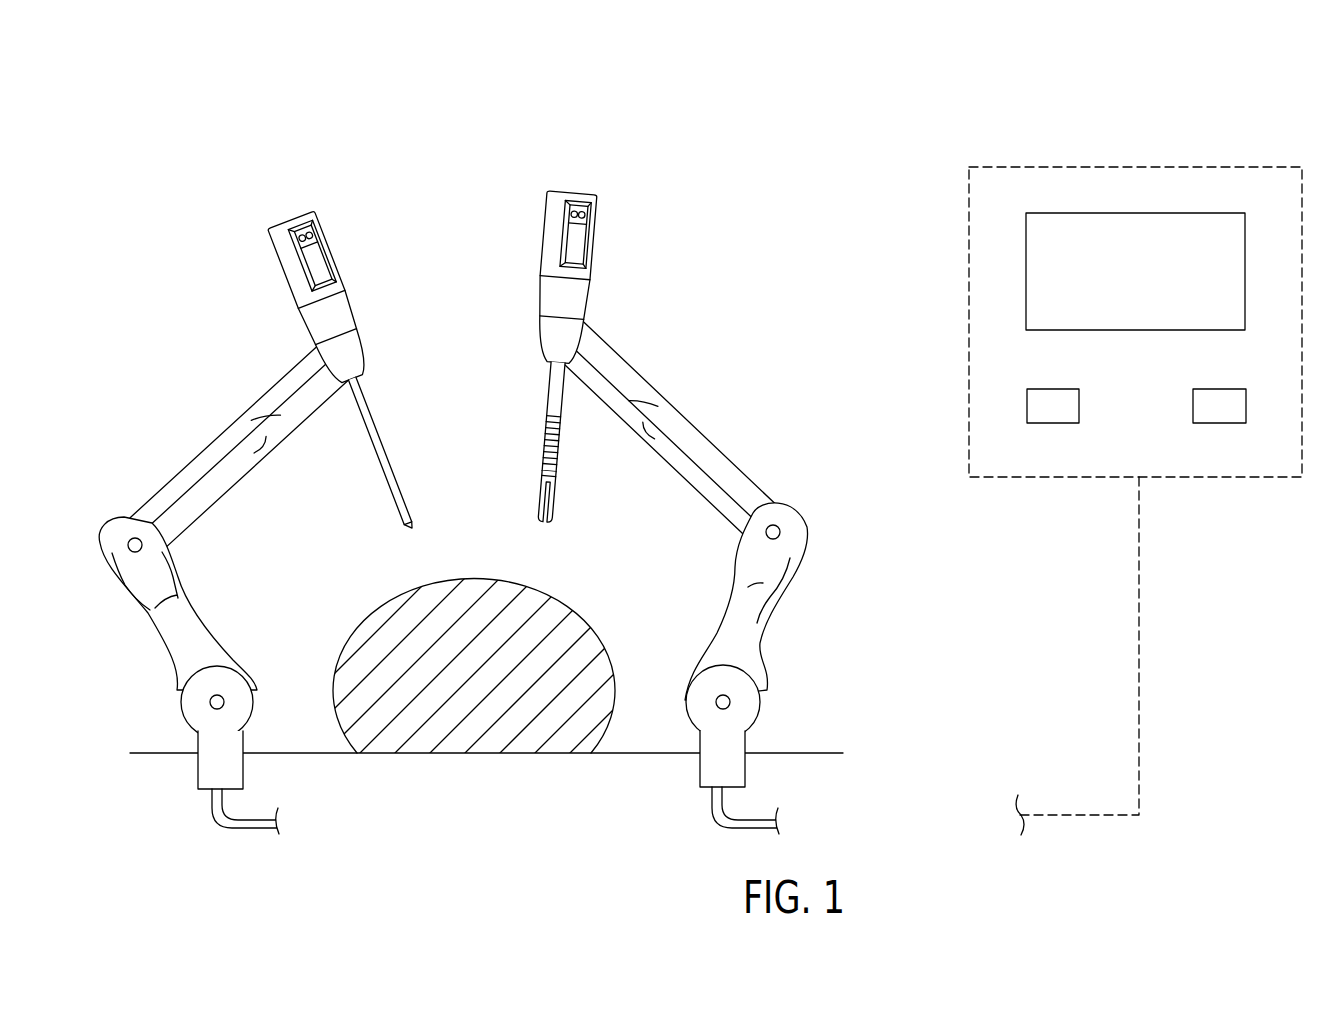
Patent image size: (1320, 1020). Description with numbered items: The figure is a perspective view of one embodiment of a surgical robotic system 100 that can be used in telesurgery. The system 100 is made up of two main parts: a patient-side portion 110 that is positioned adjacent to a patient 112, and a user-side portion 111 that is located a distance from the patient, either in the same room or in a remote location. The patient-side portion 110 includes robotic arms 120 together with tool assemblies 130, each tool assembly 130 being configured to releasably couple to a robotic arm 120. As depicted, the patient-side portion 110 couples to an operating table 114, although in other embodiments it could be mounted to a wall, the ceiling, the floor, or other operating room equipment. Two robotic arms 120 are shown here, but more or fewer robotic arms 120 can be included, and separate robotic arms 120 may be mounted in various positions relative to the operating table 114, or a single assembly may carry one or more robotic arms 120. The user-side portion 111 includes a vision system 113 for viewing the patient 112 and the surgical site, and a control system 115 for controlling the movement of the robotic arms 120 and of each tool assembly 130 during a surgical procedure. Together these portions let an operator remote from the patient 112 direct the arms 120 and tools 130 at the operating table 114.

The surgical robotic system 100 is at (485, 108).
The patient-side portion 110 is at (738, 258).
The user-side portion 111 is at (1208, 145).
The patient 112 is at (583, 616).
The vision system 113 is at (1082, 212).
The operating table 114 is at (820, 752).
The control system 115 is at (1053, 424).
The robotic arm 120 is at (190, 455).
The tool assembly 130 is at (334, 251).